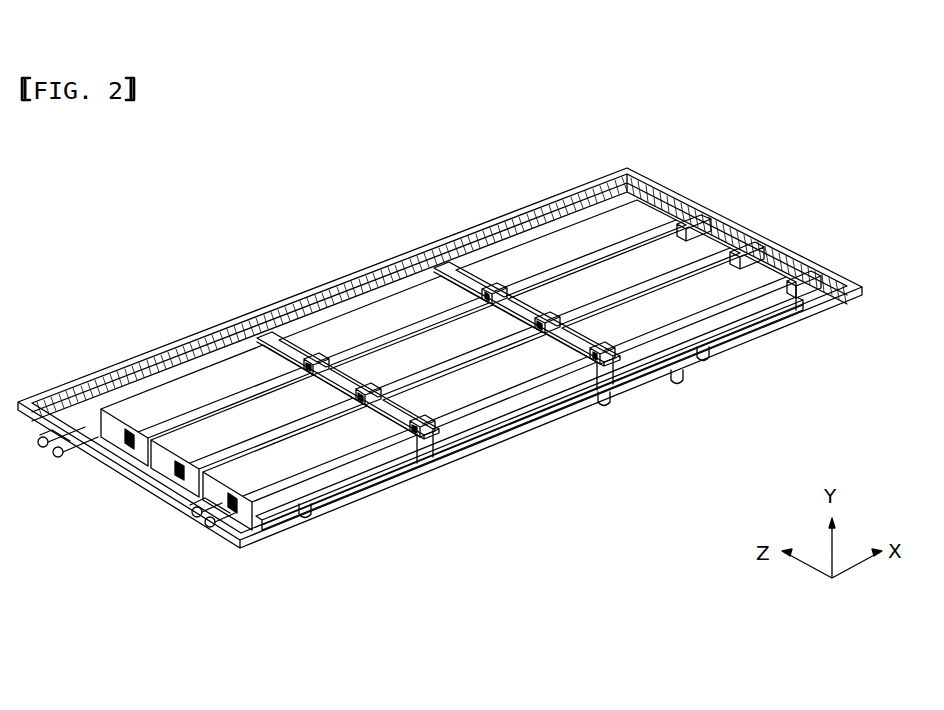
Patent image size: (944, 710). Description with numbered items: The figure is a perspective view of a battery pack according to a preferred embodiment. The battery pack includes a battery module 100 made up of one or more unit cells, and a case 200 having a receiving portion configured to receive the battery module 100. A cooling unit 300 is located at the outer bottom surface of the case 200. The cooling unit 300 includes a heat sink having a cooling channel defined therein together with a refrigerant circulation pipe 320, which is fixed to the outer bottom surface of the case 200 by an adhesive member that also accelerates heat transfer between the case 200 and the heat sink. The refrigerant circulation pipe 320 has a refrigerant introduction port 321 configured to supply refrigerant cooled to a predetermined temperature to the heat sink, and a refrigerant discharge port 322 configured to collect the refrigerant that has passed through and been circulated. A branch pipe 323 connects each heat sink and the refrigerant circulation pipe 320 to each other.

The battery module 100 is at (647, 210).
The case 200 is at (315, 293).
The cooling unit 300 is at (420, 475).
The refrigerant circulation pipe 320 is at (445, 462).
The refrigerant introduction port 321 is at (200, 522).
The refrigerant discharge port 322 is at (68, 448).
The branch pipe 323 is at (504, 488).